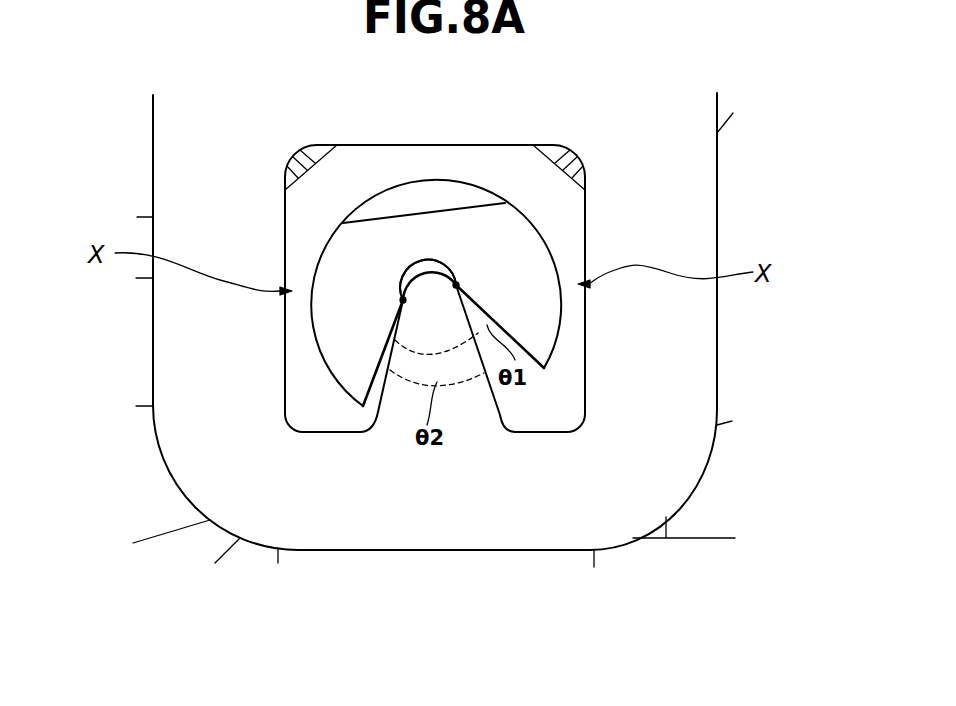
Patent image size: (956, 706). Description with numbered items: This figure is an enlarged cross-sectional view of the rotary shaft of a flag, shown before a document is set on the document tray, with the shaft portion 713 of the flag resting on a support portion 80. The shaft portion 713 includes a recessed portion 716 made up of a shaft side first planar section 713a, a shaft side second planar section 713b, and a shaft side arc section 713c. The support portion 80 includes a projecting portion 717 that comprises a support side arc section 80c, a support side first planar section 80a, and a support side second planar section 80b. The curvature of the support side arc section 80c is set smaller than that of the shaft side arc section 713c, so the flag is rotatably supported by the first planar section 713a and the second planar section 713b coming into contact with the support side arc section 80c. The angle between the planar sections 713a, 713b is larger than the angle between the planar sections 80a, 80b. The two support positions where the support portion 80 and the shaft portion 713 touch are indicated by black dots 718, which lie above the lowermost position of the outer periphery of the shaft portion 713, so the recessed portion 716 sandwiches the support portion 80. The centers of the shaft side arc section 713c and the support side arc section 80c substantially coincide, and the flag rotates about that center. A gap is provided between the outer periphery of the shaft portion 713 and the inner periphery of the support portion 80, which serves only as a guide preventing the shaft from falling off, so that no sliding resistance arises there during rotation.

The support portion 80 is at (668, 478).
The support side first planar section 80a is at (500, 405).
The support side second planar section 80b is at (372, 387).
The support side arc section 80c is at (430, 276).
The shaft portion 713 is at (505, 237).
The shaft side first planar section 713a is at (487, 322).
The shaft side second planar section 713b is at (383, 357).
The shaft side arc section 713c is at (428, 263).
The recessed portion 716 is at (420, 256).
The projecting portion 717 is at (452, 325).
The black dots 718 is at (403, 300).